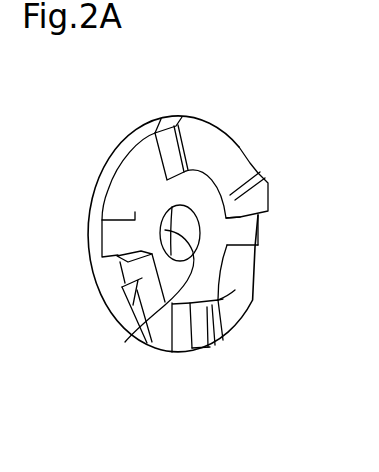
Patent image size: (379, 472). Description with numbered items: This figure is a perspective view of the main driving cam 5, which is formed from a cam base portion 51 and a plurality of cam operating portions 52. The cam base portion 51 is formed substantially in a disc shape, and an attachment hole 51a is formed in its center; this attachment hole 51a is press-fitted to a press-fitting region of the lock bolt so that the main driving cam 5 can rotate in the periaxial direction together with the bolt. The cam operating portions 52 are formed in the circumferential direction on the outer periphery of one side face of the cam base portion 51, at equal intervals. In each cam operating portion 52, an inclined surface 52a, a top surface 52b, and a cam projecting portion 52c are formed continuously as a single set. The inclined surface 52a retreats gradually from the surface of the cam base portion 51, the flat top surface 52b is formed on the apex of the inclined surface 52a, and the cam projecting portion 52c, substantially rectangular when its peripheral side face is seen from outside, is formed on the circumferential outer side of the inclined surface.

The main driving cam 5 is at (234, 133).
The cam base portion 51 is at (111, 237).
The attachment hole 51a is at (153, 318).
The cam operating portion 52 is at (146, 150).
The inclined surface 52a is at (243, 270).
The top surface 52b is at (228, 325).
The cam projecting portion 52c is at (218, 342).